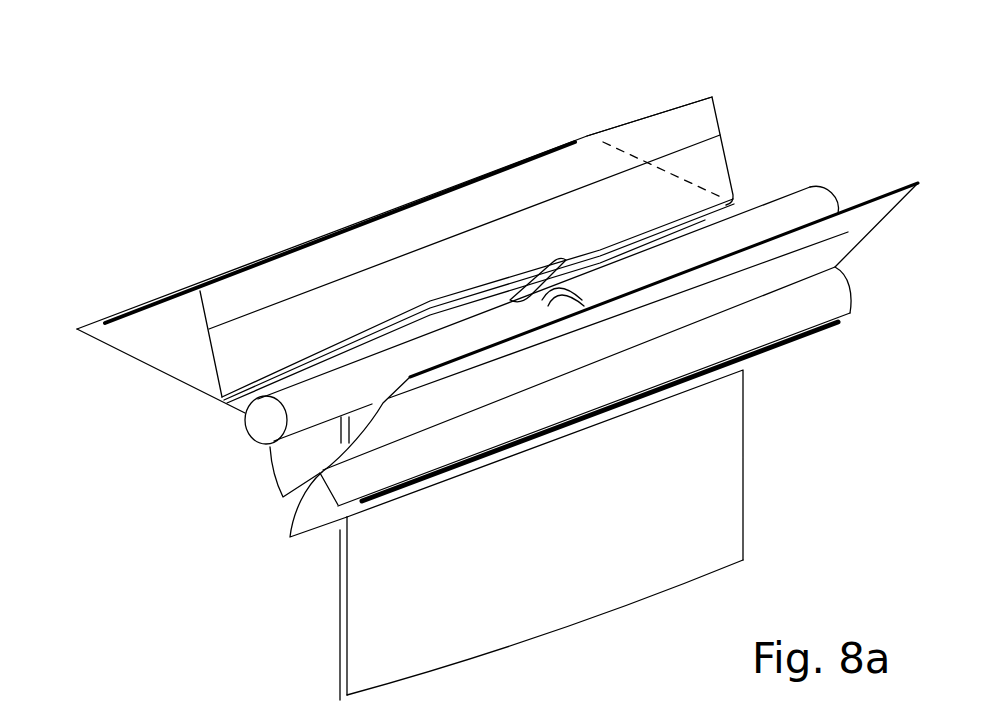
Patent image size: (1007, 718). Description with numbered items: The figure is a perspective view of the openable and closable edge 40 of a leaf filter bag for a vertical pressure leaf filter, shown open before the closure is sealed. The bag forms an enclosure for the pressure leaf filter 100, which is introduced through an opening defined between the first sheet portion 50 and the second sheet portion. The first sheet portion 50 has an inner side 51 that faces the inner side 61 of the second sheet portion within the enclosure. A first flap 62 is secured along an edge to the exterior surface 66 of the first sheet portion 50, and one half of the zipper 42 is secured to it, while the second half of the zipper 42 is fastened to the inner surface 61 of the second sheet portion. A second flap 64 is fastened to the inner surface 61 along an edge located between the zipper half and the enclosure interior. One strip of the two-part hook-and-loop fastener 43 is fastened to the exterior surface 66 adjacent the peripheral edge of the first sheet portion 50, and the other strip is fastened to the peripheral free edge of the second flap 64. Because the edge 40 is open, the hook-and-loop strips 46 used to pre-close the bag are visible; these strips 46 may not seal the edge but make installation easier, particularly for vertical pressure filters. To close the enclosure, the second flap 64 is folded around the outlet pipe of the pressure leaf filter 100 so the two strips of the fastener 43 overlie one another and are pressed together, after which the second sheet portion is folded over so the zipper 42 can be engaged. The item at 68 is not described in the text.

The openable and closable edge 40 is at (373, 122).
The zipper 42 is at (132, 297).
The hook-and-loop fastener 43 is at (693, 110).
The hook-and-loop strip 46 is at (583, 271).
The first sheet portion 50 is at (545, 569).
The inner side of the first sheet portion 51 is at (357, 423).
The inner side of the second sheet portion 61 is at (305, 474).
The first flap 62 is at (323, 484).
The second flap 64 is at (212, 352).
The exterior surface of the first sheet portion 66 is at (775, 291).
The tip flap 68 is at (112, 350).
The pressure leaf filter 100 is at (827, 190).